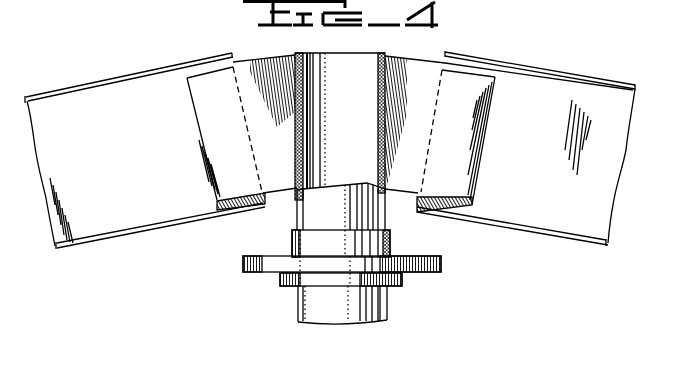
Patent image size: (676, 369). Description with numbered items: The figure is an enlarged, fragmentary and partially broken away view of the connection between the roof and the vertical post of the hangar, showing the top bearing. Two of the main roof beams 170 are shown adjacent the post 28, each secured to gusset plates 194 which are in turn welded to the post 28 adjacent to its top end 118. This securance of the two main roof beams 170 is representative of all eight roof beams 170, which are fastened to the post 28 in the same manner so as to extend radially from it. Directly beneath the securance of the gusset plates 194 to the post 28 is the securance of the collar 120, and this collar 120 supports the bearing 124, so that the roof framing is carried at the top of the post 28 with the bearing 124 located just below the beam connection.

The main roof beam 170 is at (110, 77).
The gusset plate 194 is at (267, 62).
The top end 118 is at (318, 56).
The post 28 is at (338, 78).
The bearing 124 is at (243, 262).
The collar 120 is at (402, 281).